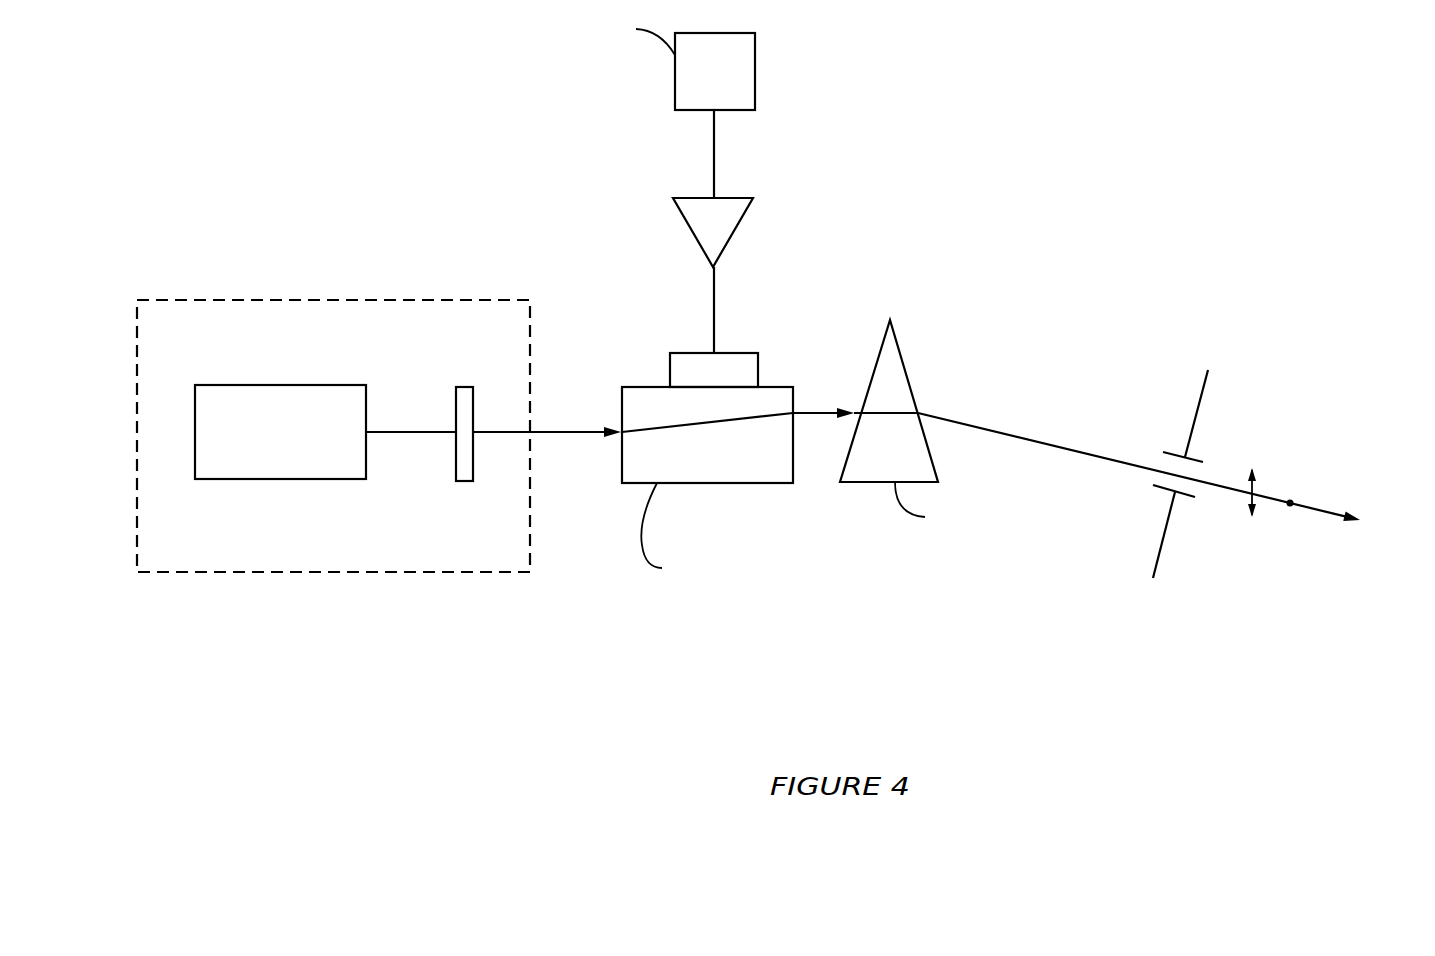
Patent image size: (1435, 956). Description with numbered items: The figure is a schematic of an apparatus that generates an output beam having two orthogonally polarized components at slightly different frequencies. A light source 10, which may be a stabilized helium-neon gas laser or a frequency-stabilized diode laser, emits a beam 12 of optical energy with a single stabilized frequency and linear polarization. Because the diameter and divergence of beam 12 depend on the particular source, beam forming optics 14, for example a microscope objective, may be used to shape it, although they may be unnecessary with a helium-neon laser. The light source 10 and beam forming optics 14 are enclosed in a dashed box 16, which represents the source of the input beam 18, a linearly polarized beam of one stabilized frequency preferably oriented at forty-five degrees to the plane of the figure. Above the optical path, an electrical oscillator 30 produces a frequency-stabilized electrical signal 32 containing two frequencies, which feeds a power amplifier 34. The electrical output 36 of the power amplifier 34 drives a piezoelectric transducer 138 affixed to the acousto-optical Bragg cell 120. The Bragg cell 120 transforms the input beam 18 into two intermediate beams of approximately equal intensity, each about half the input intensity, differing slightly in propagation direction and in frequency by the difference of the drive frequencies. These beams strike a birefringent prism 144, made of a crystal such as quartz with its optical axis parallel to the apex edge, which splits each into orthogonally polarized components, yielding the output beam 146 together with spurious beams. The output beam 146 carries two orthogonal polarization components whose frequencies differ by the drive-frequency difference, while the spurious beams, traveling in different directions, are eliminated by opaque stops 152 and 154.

The light source 10 is at (247, 385).
The beam 12 is at (417, 432).
The beam forming optics 14 is at (465, 385).
The dashed box 16 is at (225, 300).
The input beam 18 is at (562, 433).
The electrical oscillator 30 is at (757, 65).
The electrical signal 32 is at (714, 155).
The power amplifier 34 is at (733, 198).
The electrical output 36 is at (714, 316).
The piezoelectric transducer 138 is at (685, 352).
The acousto-optical Bragg cell 120 is at (752, 483).
The birefringent prism 144 is at (908, 378).
The output beam 146 is at (1161, 474).
The opaque stop 152 is at (1203, 393).
The opaque stop 154 is at (1160, 550).